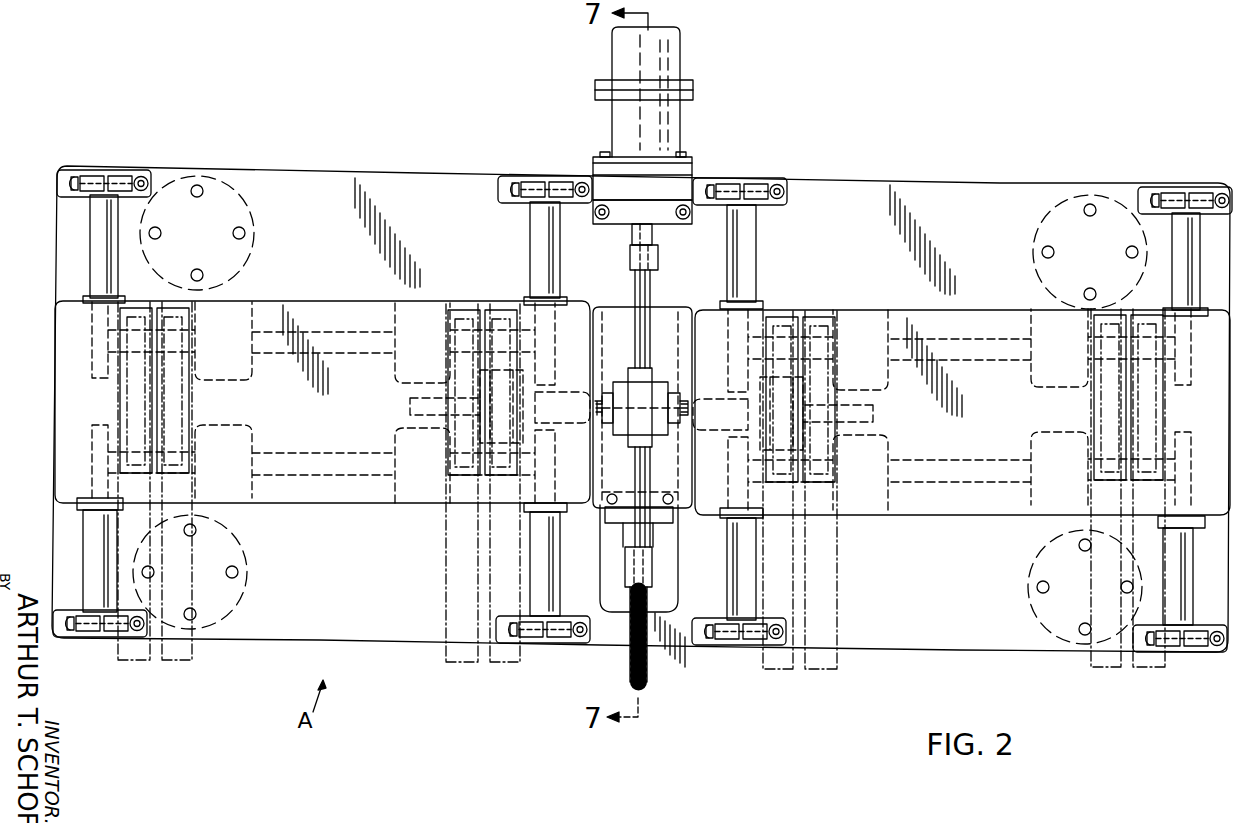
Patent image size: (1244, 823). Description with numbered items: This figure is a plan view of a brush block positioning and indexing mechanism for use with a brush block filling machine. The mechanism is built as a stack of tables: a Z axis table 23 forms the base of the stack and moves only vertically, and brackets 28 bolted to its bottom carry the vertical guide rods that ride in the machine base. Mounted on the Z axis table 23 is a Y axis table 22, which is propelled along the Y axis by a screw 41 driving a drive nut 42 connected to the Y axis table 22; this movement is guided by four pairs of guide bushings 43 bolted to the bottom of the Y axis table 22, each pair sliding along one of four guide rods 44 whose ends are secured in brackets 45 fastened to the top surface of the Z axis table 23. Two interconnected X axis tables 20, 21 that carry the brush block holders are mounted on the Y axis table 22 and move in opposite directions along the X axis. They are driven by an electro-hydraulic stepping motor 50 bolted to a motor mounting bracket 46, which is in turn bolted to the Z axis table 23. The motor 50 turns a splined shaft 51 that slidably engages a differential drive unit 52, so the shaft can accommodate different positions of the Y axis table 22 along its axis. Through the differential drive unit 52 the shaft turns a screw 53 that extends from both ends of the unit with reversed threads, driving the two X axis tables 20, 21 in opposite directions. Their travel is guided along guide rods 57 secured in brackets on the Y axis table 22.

The X axis table 20 is at (374, 503).
The X axis table 21 is at (960, 510).
The Y axis table 22 is at (617, 318).
The Z axis table 23 is at (395, 638).
The brackets 28 is at (254, 214).
The screw 41 is at (646, 672).
The drive nut 42 is at (655, 570).
The guide bushings 43 is at (83, 297).
The guide rods 44 is at (90, 238).
The brackets 45 is at (150, 178).
The motor mounting bracket 46 is at (672, 185).
The electro-hydraulic stepping motor 50 is at (672, 118).
The splined shaft 51 is at (648, 322).
The differential drive unit 52 is at (660, 386).
The screw 53 is at (594, 412).
The guide rods 57 is at (357, 330).